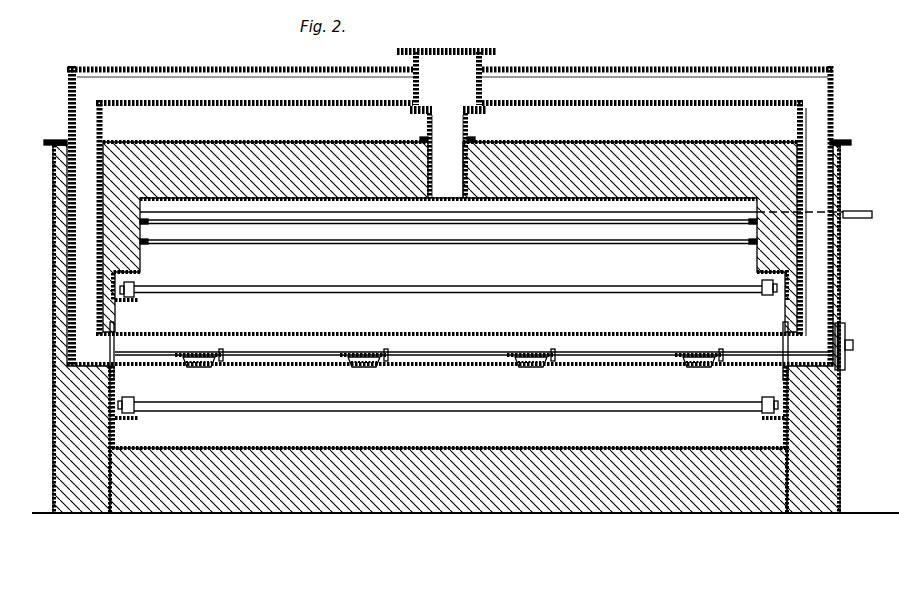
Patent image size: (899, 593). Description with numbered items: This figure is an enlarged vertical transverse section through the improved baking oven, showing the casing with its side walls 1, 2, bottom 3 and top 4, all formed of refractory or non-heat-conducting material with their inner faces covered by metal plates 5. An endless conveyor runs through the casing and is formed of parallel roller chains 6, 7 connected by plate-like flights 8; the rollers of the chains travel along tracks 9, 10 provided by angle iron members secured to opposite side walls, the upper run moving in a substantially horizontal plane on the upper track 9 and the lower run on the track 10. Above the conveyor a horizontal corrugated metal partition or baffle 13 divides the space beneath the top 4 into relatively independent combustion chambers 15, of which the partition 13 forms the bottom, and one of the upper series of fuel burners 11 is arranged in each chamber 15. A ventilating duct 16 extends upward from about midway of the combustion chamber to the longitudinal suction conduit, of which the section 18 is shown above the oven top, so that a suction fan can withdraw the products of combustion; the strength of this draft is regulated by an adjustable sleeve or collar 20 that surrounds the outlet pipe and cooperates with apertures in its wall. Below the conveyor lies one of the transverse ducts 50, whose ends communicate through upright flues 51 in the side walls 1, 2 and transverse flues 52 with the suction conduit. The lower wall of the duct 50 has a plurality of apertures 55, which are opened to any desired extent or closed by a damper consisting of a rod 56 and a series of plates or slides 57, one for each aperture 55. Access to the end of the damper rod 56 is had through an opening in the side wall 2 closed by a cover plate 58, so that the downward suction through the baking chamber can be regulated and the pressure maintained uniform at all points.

The side wall 1 is at (60, 411).
The side wall 2 is at (828, 412).
The bottom 3 is at (522, 491).
The top 4 is at (575, 147).
The metal plates 5 is at (626, 197).
The roller chain 6 is at (140, 294).
The roller chain 7 is at (760, 294).
The plate-like flights 8 is at (407, 285).
The upper track 9 is at (130, 313).
The track 10 is at (138, 419).
The upper series of fuel burners 11 is at (652, 215).
The horizontal metal partition 13 is at (578, 238).
The combustion chambers 15 is at (528, 227).
The ventilating duct 16 is at (437, 165).
The conduit section 18 is at (447, 81).
The sleeve or collar 20 is at (473, 126).
The transverse ducts 50 is at (460, 345).
The upright flues 51 is at (833, 133).
The transverse flues 52 is at (195, 80).
The apertures 55 is at (207, 369).
The rod 56 is at (734, 353).
The plates or slides 57 is at (357, 366).
The cover plate 58 is at (847, 323).